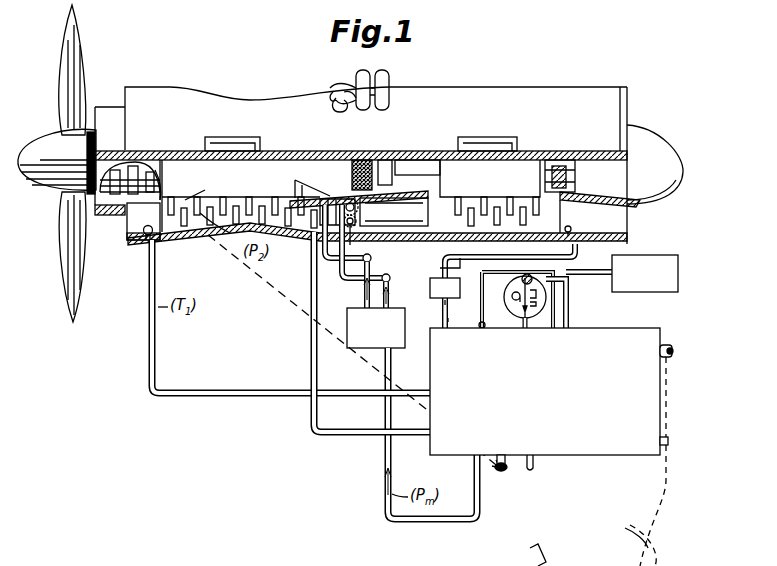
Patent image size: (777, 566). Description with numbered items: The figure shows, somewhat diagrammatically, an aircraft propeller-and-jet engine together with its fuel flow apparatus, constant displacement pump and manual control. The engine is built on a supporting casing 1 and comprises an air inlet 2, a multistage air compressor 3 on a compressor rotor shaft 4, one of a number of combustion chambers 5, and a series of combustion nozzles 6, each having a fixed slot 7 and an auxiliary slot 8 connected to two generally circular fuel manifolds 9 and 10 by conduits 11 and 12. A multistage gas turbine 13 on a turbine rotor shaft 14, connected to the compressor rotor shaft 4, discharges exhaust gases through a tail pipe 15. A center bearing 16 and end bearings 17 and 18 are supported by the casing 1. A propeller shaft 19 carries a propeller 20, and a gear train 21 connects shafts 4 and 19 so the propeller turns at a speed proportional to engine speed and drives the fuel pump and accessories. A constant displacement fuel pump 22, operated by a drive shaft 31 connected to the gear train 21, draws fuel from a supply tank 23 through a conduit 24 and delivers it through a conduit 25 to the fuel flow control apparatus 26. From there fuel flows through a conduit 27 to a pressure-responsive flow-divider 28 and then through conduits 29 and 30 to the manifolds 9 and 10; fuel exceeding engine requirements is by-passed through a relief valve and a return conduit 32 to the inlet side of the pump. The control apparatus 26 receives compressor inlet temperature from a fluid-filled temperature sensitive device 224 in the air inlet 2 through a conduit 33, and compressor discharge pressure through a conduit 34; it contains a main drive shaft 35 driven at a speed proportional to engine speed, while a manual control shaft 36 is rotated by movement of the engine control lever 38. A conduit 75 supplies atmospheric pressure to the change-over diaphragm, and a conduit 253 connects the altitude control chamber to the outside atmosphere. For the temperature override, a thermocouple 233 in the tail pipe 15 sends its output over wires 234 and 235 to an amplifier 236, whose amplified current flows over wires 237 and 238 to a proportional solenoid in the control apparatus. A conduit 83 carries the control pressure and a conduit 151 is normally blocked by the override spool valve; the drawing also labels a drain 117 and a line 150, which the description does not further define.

The supporting casing 1 is at (540, 125).
The air inlet 2 is at (124, 240).
The multistage air compressor 3 is at (226, 236).
The compressor rotor shaft 4 is at (227, 190).
The combustion chamber 5 is at (391, 222).
The combustion nozzle 6 is at (350, 229).
The fixed slot 7 is at (305, 192).
The auxiliary slot 8 is at (337, 200).
The fuel manifold 9 is at (363, 72).
The fuel manifold 10 is at (387, 78).
The conduit 11 is at (338, 90).
The conduit 12 is at (346, 249).
The multistage gas turbine 13 is at (500, 245).
The turbine rotor shaft 14 is at (490, 193).
The tail pipe 15 is at (596, 213).
The center bearing 16 is at (376, 158).
The end bearing 17 is at (160, 170).
The end bearing 18 is at (560, 160).
The propeller shaft 19 is at (92, 115).
The propeller 20 is at (64, 255).
The gear train 21 is at (133, 166).
The constant displacement fuel pump 22 is at (505, 297).
The supply tank 23 is at (676, 270).
The conduit 24 is at (521, 280).
The conduit 25 is at (521, 324).
The fuel flow control apparatus 26 is at (600, 327).
The conduit 27 is at (385, 457).
The pressure-responsive flow-divider 28 is at (400, 348).
The conduit 29 is at (362, 303).
The conduit 30 is at (389, 308).
The drive shaft 31 is at (568, 283).
The return conduit 32 is at (568, 303).
The conduit 33 is at (156, 292).
The conduit 34 is at (310, 348).
The main drive shaft 35 is at (508, 470).
The manual control shaft 36 is at (670, 346).
The engine control lever 38 is at (553, 563).
The conduit 75 is at (670, 442).
The drain 117 is at (536, 464).
The temperature sensitive device 224 is at (144, 238).
The temperature detecting thermocouple 233 is at (572, 232).
The wire 234 is at (432, 266).
The wire 235 is at (524, 275).
The amplifier 236 is at (445, 288).
The wire 237 is at (446, 312).
The wire 238 is at (450, 324).
The conduit 253 is at (482, 328).
The conduit 83 is at (125, 560).
The lever 150 is at (160, 559).
The conduit 151 is at (197, 559).